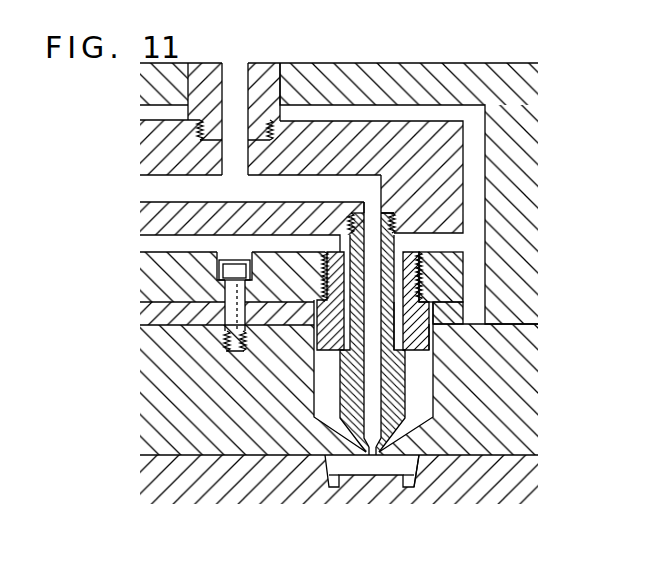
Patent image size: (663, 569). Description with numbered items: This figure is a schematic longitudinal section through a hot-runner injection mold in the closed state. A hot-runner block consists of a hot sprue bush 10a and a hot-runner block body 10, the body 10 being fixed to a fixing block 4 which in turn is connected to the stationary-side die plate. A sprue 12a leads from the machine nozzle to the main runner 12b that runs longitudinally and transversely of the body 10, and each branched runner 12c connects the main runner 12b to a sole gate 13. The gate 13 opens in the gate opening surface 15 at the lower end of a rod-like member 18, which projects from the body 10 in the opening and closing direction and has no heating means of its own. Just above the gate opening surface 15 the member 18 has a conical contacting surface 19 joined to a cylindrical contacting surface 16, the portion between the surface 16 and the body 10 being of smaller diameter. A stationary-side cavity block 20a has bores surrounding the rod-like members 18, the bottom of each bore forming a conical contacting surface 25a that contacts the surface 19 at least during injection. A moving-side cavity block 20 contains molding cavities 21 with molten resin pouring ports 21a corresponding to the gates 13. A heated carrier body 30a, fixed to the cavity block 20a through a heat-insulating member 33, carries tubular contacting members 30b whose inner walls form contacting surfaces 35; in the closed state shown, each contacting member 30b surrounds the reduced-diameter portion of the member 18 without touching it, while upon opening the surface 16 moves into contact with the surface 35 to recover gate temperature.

The fixing block 4 is at (398, 78).
The hot-runner block body 10 is at (403, 147).
The hot sprue bush 10a is at (273, 82).
The sprue 12a is at (232, 73).
The main runner 12b is at (316, 187).
The branched runner 12c is at (372, 259).
The gate 13 is at (390, 441).
The gate opening surface 15 is at (371, 463).
The cylindrical contacting surface 16 is at (331, 383).
The rod-like member 18 is at (406, 383).
The conical contacting surface 19 is at (367, 444).
The moving-side cavity block 20 is at (518, 482).
The stationary-side cavity block 20a is at (517, 362).
The molding cavity 21 is at (331, 470).
The molten resin pouring port 21a is at (386, 468).
The conical contacting surface 25a is at (417, 479).
The carrier body 30a is at (450, 273).
The contacting member 30b is at (416, 313).
The heat-insulating member 33 is at (152, 317).
The contacting surface 35 is at (400, 325).